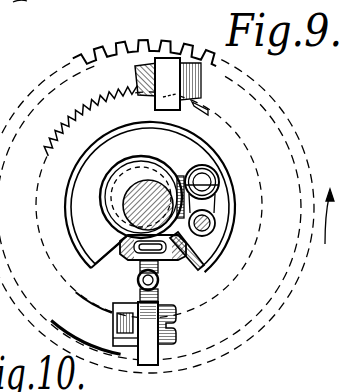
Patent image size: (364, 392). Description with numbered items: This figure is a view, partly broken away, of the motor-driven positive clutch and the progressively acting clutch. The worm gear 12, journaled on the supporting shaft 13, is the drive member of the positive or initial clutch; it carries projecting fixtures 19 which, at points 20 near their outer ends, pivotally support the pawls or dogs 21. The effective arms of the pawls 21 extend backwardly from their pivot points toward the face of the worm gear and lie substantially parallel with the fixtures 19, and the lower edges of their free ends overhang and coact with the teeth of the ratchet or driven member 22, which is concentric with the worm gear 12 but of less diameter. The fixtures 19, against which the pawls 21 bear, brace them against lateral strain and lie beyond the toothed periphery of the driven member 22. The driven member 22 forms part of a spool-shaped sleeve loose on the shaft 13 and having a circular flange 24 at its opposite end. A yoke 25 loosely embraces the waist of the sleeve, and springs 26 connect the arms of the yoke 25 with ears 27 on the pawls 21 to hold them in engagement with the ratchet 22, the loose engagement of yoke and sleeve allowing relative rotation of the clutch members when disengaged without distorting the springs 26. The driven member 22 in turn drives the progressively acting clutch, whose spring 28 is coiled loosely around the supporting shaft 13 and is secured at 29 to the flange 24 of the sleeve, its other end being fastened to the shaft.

The worm gear 12 is at (122, 43).
The supporting shaft 13 is at (161, 190).
The projecting fixtures 19 is at (172, 64).
The pivot points 20 is at (113, 321).
The pawls or dogs 21 is at (136, 78).
The ratchet or driven member 22 is at (82, 118).
The circular flange 24 is at (86, 184).
The yoke 25 is at (115, 258).
The springs 26 is at (138, 279).
The ears 27 is at (160, 284).
The spring 28 is at (134, 172).
The securing point of spring to flange 29 is at (213, 197).